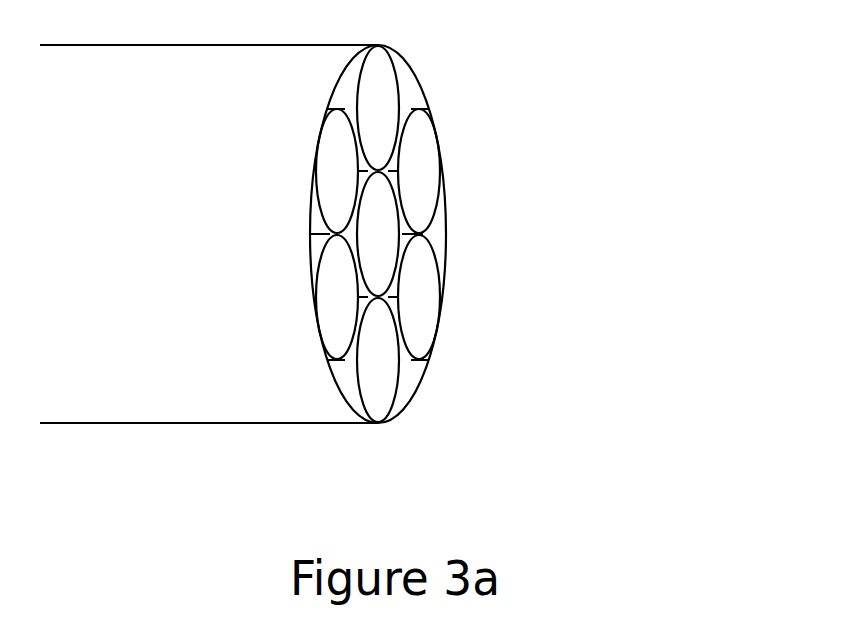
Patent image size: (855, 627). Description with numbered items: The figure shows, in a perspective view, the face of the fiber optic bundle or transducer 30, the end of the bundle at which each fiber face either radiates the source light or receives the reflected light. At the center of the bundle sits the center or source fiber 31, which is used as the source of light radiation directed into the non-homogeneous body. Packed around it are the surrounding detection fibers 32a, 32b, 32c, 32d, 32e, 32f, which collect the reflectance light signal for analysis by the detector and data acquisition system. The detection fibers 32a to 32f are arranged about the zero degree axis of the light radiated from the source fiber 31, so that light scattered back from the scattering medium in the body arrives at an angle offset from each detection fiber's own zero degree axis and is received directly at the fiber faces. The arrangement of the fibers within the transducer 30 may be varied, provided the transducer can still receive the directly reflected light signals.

The fiber optic bundle or transducer 30 is at (653, 113).
The center fiber 31 is at (375, 240).
The detection fiber 32a is at (422, 292).
The detection fiber 32b is at (422, 165).
The detection fiber 32c is at (378, 98).
The detection fiber 32d is at (335, 163).
The detection fiber 32e is at (328, 292).
The detection fiber 32f is at (380, 364).